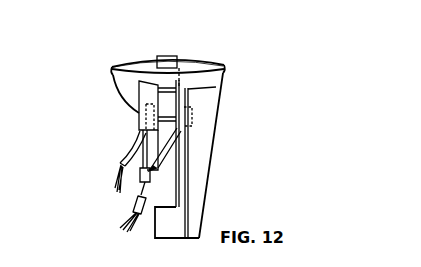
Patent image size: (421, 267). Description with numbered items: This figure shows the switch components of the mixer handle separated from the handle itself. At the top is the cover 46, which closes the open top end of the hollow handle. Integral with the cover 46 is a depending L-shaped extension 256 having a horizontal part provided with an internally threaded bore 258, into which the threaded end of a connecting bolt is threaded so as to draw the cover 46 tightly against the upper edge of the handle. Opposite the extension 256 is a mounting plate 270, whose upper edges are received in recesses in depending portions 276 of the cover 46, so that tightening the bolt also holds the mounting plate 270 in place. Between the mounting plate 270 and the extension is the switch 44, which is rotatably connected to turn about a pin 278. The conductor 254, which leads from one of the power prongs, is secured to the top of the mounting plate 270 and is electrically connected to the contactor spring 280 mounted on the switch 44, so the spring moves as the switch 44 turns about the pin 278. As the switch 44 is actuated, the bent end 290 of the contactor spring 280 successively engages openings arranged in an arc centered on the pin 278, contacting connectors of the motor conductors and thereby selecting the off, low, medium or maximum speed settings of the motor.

The switch 44 is at (175, 56).
The cover 46 is at (224, 71).
The conductor 254 is at (119, 160).
The L-shaped extension 256 is at (204, 167).
The internally threaded bore 258 is at (165, 227).
The mounting plate 270 is at (138, 186).
The depending portions 276 is at (139, 96).
The pin 278 is at (194, 112).
The contactor spring 280 is at (185, 128).
The bent end 290 is at (158, 168).